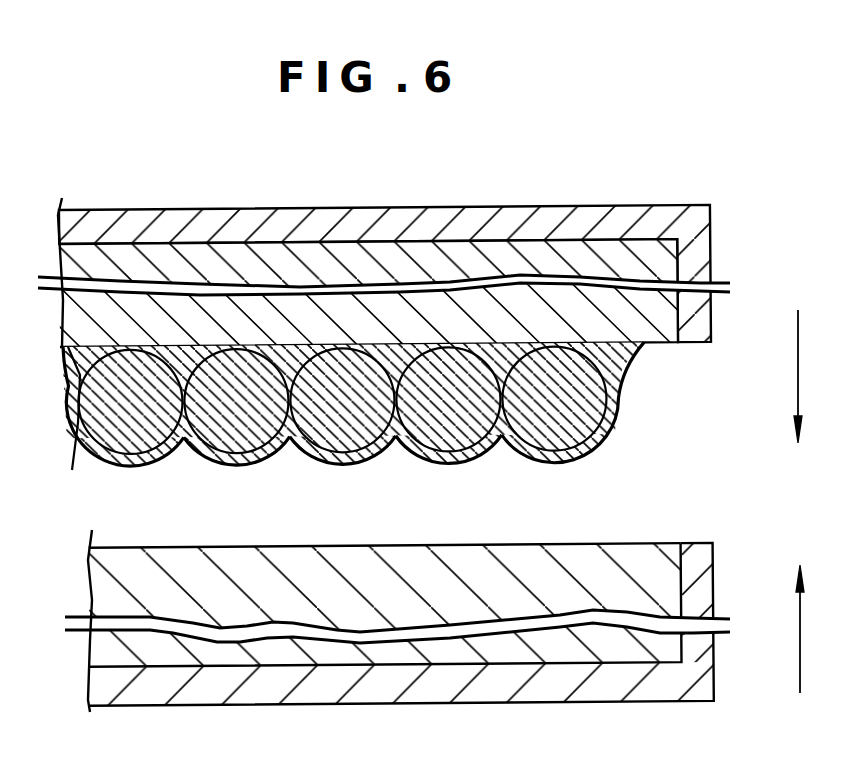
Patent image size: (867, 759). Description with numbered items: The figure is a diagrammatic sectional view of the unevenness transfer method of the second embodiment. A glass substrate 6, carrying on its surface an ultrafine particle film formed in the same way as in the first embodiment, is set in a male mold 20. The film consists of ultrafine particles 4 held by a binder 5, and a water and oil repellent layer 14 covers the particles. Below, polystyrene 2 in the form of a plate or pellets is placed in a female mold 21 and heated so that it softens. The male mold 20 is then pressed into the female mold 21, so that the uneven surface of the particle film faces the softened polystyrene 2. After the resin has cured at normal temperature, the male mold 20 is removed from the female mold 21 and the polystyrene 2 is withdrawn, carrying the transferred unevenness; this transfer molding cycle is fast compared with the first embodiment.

The male mold 20 is at (697, 236).
The glass substrate 6 is at (663, 323).
The binder 5 is at (615, 352).
The ultrafine particles 4 is at (592, 408).
The water and oil repellent layer 14 is at (579, 458).
The polystyrene 2 is at (678, 592).
The female mold 21 is at (702, 678).